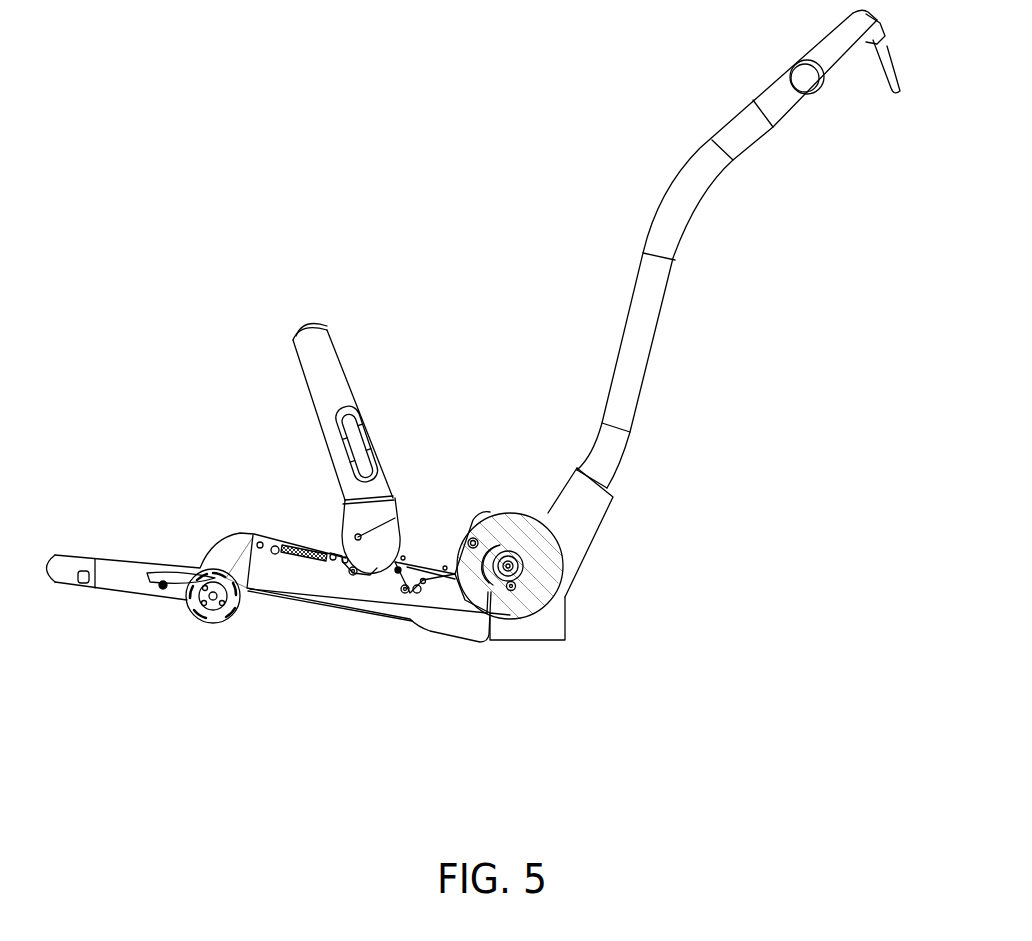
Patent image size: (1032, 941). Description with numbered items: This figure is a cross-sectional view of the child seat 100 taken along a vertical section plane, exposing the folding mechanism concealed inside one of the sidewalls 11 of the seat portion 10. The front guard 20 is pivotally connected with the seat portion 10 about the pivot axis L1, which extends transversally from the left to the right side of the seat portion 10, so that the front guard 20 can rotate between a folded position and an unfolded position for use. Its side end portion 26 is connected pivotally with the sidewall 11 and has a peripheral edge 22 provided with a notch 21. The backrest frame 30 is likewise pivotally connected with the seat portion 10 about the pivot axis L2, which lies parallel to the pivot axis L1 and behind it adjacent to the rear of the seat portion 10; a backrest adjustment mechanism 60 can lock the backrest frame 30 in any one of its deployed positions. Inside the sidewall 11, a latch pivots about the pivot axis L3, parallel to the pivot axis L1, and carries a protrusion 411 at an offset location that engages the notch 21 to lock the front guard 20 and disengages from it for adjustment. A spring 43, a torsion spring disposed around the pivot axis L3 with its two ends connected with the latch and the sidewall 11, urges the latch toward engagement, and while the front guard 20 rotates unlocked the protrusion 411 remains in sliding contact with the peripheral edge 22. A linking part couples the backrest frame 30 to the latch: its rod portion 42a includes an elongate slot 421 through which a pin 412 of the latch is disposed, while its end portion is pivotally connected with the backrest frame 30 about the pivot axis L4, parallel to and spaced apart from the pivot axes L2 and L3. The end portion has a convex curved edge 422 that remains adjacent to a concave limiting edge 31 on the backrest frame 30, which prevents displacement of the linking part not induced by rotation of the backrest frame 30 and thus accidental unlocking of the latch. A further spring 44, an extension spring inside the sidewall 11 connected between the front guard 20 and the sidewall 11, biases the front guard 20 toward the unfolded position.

The child seat 100 is at (184, 251).
The seat portion 10 is at (221, 529).
The sidewall 11 is at (283, 583).
The front guard 20 is at (346, 361).
The notch 21 is at (333, 553).
The peripheral edge 22 is at (345, 565).
The side end portion 26 is at (403, 557).
The backrest frame 30 is at (741, 180).
The limiting edge 31 is at (517, 573).
The spring 44 is at (285, 549).
The backrest adjustment mechanism 60 is at (526, 511).
The protrusion 411 is at (353, 576).
The pin 412 is at (405, 593).
The elongate slot 421 is at (445, 567).
The edge 422 is at (516, 589).
The rod portion 42a is at (433, 595).
The spring 43 is at (396, 575).
The pivot axis L1 is at (387, 533).
The pivot axis L2 is at (513, 566).
The pivot axis L3 is at (423, 580).
The pivot axis L4 is at (513, 588).